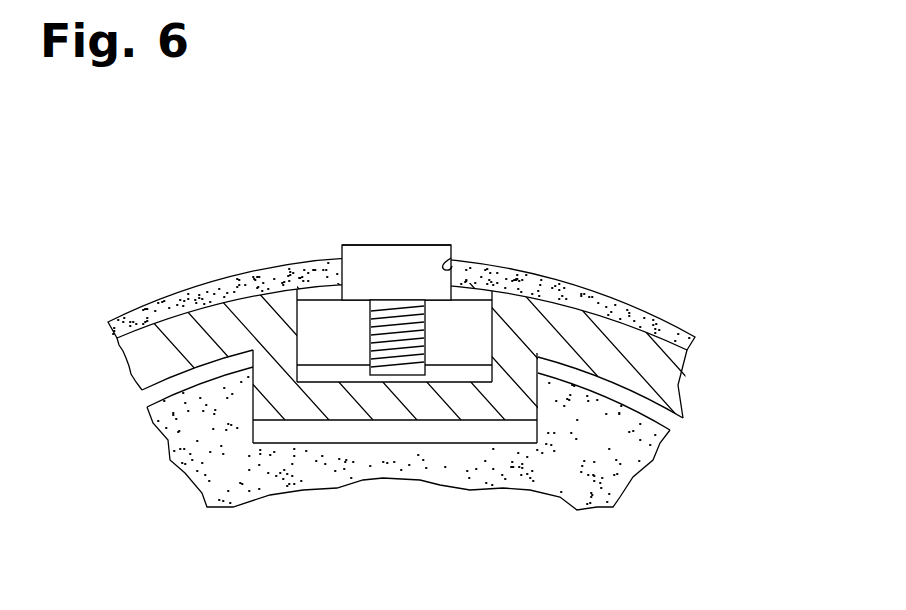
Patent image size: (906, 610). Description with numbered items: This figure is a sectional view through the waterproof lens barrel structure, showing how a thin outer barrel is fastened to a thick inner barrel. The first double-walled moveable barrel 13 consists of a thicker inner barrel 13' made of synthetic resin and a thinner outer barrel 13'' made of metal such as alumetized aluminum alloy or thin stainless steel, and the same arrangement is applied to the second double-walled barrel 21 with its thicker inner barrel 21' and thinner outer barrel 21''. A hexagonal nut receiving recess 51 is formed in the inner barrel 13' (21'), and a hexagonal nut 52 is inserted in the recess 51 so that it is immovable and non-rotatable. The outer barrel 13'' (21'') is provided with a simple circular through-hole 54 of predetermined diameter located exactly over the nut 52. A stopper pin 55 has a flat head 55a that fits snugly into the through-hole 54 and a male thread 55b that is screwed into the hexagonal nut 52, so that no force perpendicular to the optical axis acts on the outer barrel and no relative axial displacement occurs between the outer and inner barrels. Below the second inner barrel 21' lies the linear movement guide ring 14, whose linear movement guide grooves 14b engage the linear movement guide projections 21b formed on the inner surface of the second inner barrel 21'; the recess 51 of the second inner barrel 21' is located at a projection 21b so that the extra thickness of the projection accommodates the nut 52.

The first double-walled moveable barrel 13 is at (419, 319).
The first outer barrel 13'' is at (401, 283).
The first inner barrel 13' is at (422, 345).
The second double-walled barrel 21 is at (487, 389).
The second outer barrel 21'' is at (718, 383).
The second inner barrel 21' is at (453, 398).
The linear movement guide projections 21b is at (428, 413).
The linear movement guide ring 14 is at (563, 497).
The linear movement guide grooves 14b is at (530, 430).
The hexagonal nut receiving recess 51 is at (467, 372).
The hexagonal nut 52 is at (318, 325).
The through-hole 54 is at (450, 258).
The stopper pin 55 is at (412, 244).
The flat head 55a is at (367, 258).
The male thread 55b is at (385, 362).